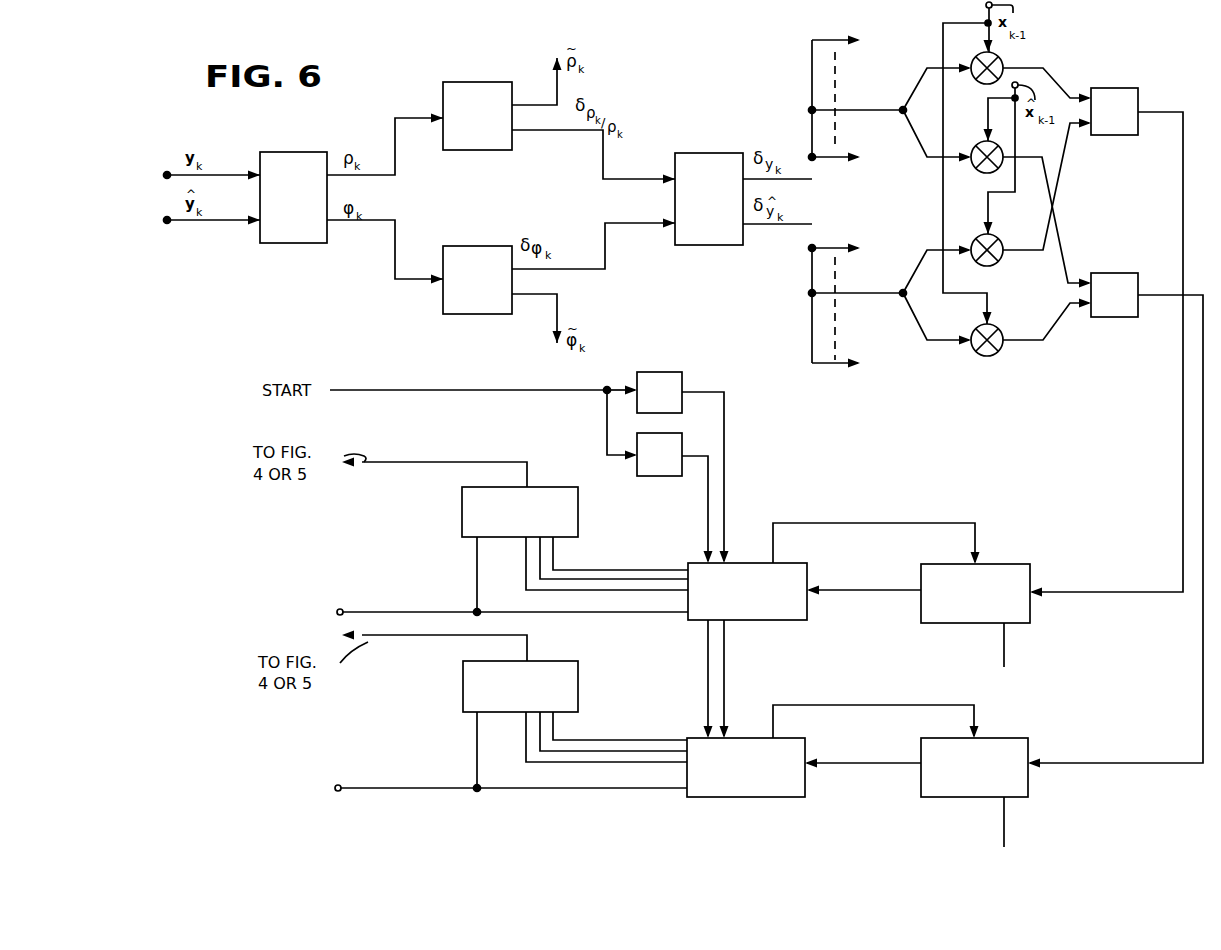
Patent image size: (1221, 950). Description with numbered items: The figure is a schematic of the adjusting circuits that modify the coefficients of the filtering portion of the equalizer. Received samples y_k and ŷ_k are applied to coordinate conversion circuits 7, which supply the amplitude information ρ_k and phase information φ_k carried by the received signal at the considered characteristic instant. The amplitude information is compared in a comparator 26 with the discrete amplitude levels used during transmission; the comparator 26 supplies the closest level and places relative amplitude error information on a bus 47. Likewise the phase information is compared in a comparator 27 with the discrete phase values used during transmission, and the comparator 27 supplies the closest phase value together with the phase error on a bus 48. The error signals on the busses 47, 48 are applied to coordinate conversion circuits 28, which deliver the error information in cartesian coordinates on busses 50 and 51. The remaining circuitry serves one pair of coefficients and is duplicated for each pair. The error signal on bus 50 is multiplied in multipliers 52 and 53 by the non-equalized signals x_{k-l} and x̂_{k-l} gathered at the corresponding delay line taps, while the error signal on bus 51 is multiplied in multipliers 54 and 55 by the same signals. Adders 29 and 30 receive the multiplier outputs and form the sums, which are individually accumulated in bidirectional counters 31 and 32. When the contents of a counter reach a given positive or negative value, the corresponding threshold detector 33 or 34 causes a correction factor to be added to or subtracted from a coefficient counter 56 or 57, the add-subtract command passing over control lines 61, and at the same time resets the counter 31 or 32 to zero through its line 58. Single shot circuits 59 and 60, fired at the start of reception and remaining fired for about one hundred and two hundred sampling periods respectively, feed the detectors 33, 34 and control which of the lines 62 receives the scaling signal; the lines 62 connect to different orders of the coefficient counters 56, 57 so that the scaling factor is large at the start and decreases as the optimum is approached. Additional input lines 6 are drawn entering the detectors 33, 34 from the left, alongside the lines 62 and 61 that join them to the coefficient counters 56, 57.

The input line from element 6 is at (338, 607).
The coordinate conversion circuits 7 is at (306, 154).
The comparator 26 is at (481, 88).
The comparator 27 is at (481, 303).
The coordinate conversion circuits 28 is at (712, 163).
The adder 29 is at (1131, 78).
The adder 30 is at (1117, 275).
The bidirectional counter 31 is at (1012, 563).
The bidirectional counter 32 is at (1012, 738).
The threshold detector 33 is at (808, 570).
The threshold detector 34 is at (805, 745).
The bus 47 is at (574, 135).
The bus 48 is at (619, 228).
The bus 50 is at (812, 83).
The bus 51 is at (812, 266).
The multiplier 52 is at (1000, 59).
The multiplier 53 is at (978, 143).
The multiplier 54 is at (999, 240).
The multiplier 55 is at (977, 352).
The coefficient counter 56 is at (578, 508).
The coefficient counter 57 is at (578, 680).
The line 58 is at (892, 522).
The single shot circuit 59 is at (673, 372).
The single shot circuit 60 is at (679, 436).
The lines 61 is at (605, 613).
The lines 62 is at (643, 551).